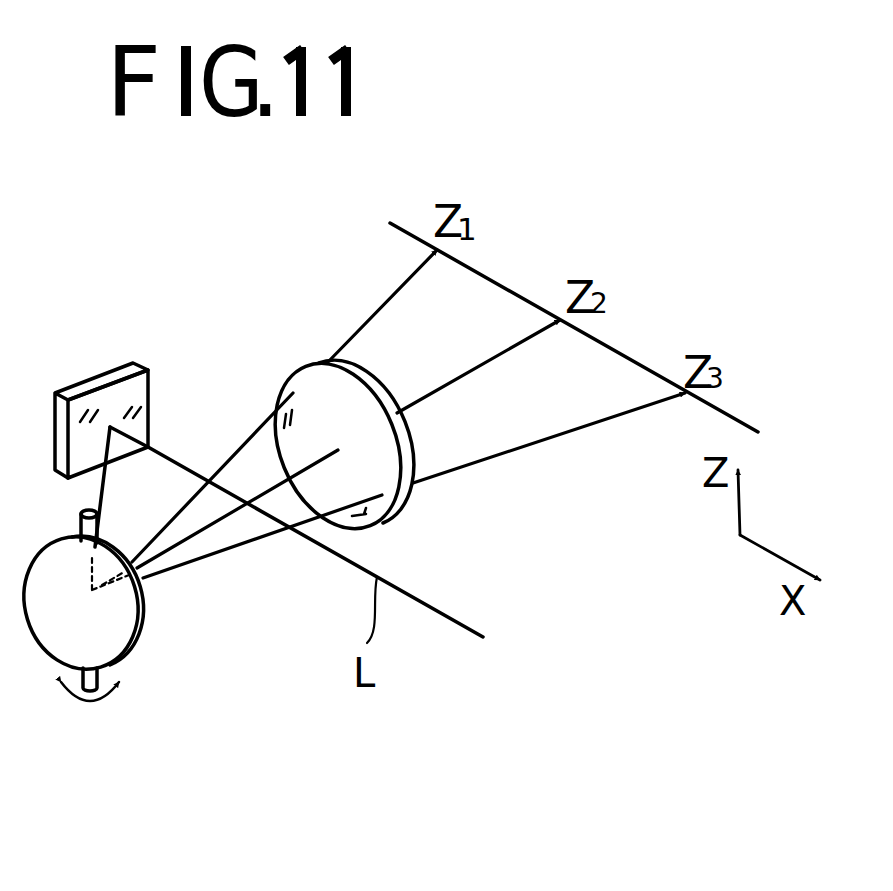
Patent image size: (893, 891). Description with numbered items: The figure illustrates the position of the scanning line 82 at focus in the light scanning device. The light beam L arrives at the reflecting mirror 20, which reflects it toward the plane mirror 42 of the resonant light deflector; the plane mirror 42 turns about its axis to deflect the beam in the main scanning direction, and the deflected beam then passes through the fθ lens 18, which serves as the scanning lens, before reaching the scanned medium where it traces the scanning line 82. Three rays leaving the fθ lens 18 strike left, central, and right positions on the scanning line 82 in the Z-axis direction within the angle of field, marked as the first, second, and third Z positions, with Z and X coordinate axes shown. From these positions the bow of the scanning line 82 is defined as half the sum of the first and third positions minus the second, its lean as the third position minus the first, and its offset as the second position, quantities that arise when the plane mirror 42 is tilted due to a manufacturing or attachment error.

The reflecting mirror 20 is at (110, 393).
The plane mirror 42 is at (122, 628).
The fθ lens 18 is at (410, 500).
The scanning line 82 is at (497, 278).